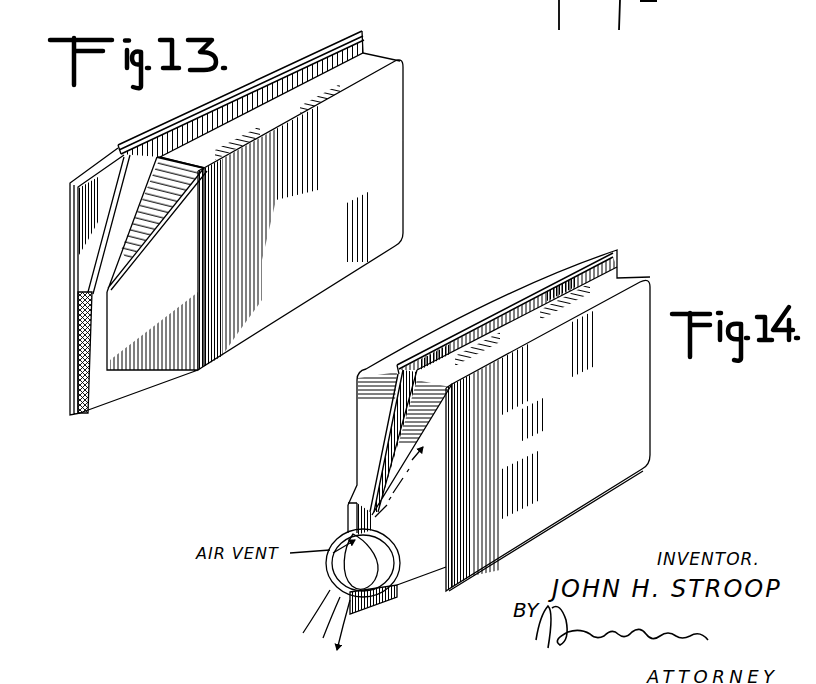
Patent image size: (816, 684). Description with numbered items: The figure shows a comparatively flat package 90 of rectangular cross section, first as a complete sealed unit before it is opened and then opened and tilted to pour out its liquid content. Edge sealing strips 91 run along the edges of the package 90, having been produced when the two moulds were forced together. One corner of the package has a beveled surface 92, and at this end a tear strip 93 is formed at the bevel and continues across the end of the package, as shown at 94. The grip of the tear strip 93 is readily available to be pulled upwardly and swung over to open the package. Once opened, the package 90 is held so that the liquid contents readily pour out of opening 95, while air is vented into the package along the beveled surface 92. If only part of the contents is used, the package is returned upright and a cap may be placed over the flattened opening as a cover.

In FIG. 13, the package 90 is at (405, 127).
In FIG. 14, the package 90 is at (612, 470).
In FIG. 13, the edge sealing strips 91 is at (338, 43).
In FIG. 14, the edge sealing strips 91 is at (533, 292).
In FIG. 13, the beveled surface 92 is at (148, 230).
In FIG. 14, the beveled surface 92 is at (415, 421).
In FIG. 13, the tear strip 93 is at (88, 177).
In FIG. 13, the tear strip across end of package 94 is at (78, 345).
In FIG. 14, the opening 95 is at (373, 605).